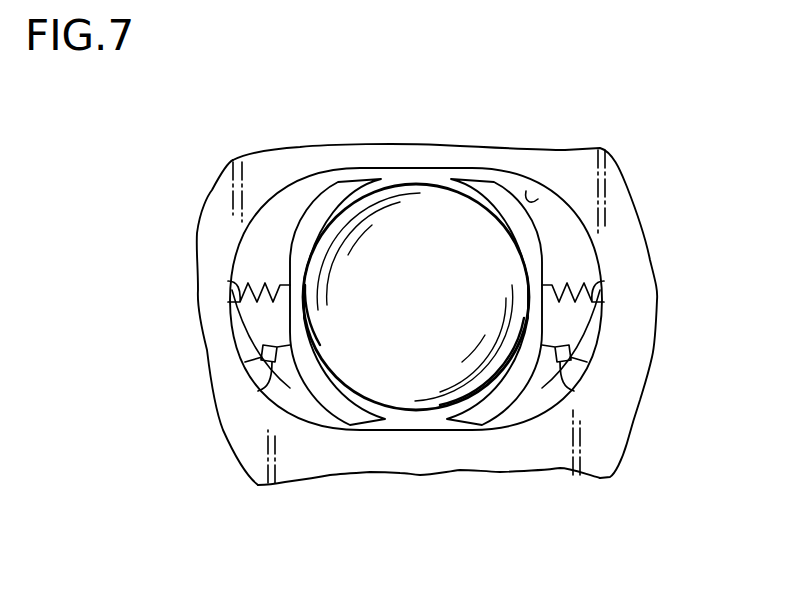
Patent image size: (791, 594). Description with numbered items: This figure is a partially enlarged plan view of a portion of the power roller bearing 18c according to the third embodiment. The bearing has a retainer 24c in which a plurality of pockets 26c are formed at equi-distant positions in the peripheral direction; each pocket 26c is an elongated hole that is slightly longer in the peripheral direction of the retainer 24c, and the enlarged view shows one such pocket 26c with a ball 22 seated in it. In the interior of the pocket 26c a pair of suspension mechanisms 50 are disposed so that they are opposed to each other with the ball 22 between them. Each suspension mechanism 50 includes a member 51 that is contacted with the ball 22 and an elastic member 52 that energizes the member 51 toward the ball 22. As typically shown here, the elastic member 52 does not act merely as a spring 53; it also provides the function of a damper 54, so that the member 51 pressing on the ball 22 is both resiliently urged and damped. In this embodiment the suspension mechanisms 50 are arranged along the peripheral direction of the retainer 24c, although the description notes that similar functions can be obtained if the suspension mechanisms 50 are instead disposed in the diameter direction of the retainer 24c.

The power roller bearing 18c is at (632, 150).
The ball 22 is at (437, 202).
The retainer 24c is at (408, 458).
The pocket 26c is at (534, 194).
The suspension mechanism 50 is at (264, 263).
The member 51 is at (336, 198).
The elastic member 52 is at (245, 325).
The spring 53 is at (228, 280).
The damper 54 is at (257, 391).